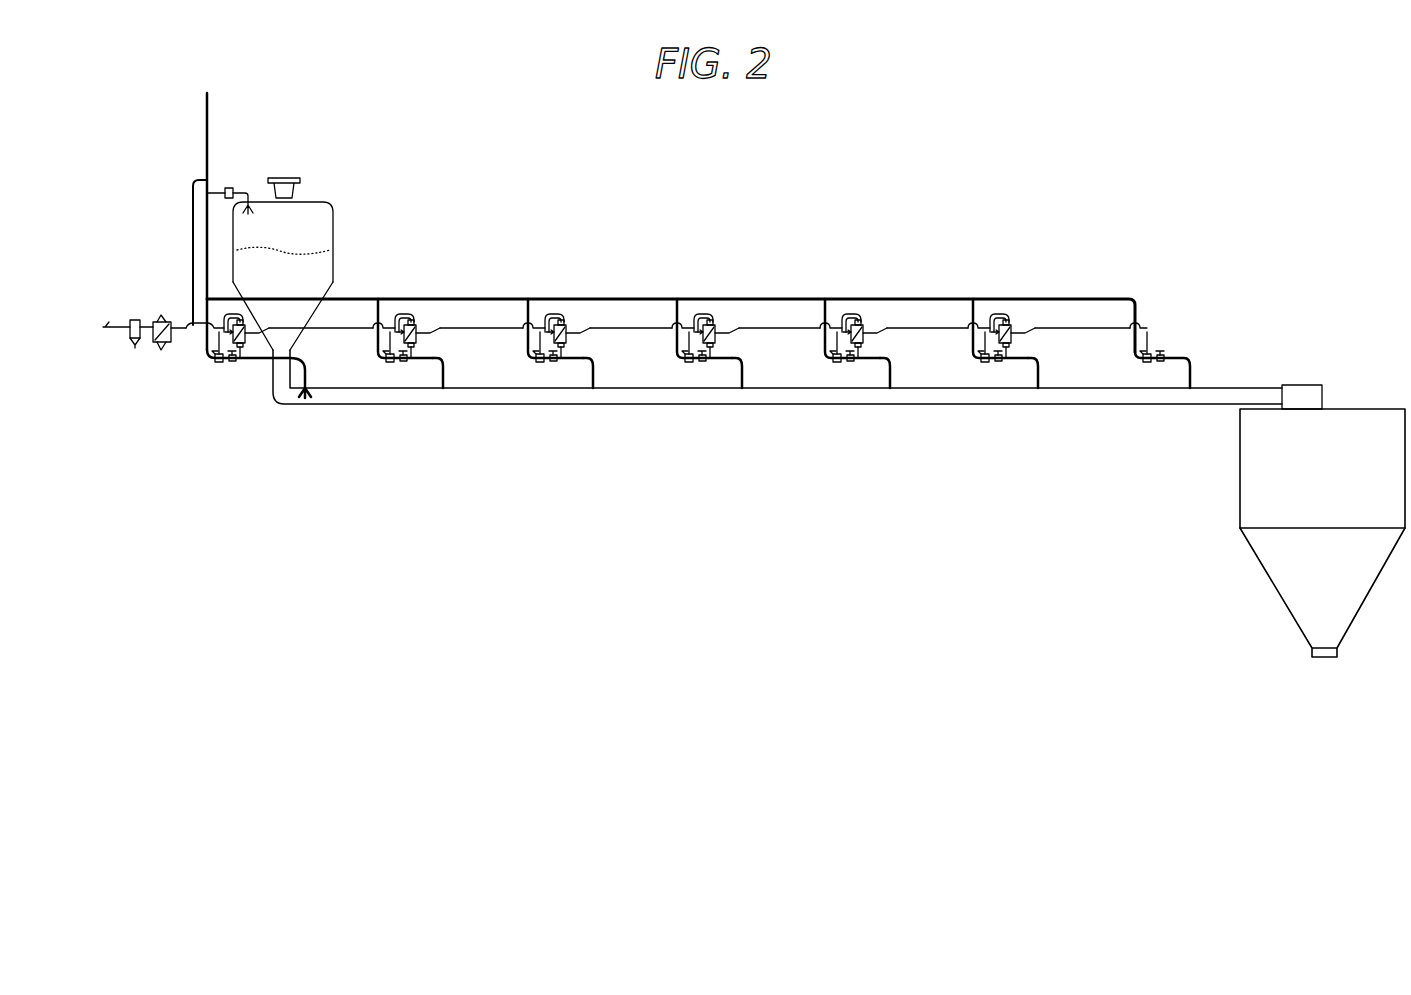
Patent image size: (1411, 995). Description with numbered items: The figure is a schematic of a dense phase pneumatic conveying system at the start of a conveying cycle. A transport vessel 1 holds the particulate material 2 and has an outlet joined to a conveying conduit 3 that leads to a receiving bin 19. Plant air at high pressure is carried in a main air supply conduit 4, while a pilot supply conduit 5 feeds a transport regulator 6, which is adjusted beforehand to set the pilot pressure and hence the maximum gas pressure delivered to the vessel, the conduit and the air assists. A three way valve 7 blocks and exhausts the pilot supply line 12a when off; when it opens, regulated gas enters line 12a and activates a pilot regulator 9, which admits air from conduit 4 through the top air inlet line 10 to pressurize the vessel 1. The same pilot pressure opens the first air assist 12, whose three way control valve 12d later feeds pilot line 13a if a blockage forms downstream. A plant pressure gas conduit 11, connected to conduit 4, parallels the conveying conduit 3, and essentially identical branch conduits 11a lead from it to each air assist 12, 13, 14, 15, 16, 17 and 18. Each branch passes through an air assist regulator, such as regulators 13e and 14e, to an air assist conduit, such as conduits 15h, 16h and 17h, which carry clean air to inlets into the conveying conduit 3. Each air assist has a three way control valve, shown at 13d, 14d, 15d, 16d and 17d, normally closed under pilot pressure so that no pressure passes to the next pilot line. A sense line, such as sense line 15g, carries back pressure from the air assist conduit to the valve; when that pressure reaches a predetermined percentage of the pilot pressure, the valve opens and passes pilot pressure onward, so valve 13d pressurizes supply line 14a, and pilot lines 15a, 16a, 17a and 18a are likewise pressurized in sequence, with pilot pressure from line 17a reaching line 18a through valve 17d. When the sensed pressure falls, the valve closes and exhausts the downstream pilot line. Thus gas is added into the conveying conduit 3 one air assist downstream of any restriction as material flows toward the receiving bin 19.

The transport vessel 1 is at (306, 244).
The material 2 is at (307, 252).
The conveying conduit 3 is at (638, 392).
The main air supply conduit 4 is at (207, 112).
The pilot supply conduit 5 is at (105, 329).
The transport regulator 6 is at (130, 325).
The three way valve 7 is at (160, 316).
The pilot regulator 9 is at (232, 188).
The inlet line 10 is at (250, 193).
The plant pressure gas conduit 11 is at (512, 299).
The branch conduit 11a is at (202, 333).
The first air assist 12 is at (259, 421).
The pilot supply line 12a is at (193, 213).
The three way control valve 12d is at (243, 360).
The air assist 13 is at (421, 413).
The pilot line 13a is at (325, 330).
The three way control valve 13d is at (413, 345).
The air assist regulator 13e is at (389, 364).
The air assist 14 is at (566, 413).
The supply line 14a is at (470, 330).
The three way control valve 14d is at (563, 345).
The air assist regulator 14e is at (538, 364).
The air assist 15 is at (713, 413).
The pilot supply line 15a is at (625, 330).
The three way control valve 15d is at (713, 345).
The sense line 15g is at (693, 348).
The air assist conduit 15h is at (744, 374).
The air assist 16 is at (896, 413).
The pilot supply line 16a is at (765, 330).
The three way control valve 16d is at (860, 345).
The air assist conduit 16h is at (892, 374).
The air assist 17 is at (1047, 413).
The pilot line 17a is at (920, 330).
The three way control valve 17d is at (1010, 345).
The air assist conduit 17h is at (1040, 374).
The air assist 18 is at (1147, 366).
The pilot supply line 18a is at (1068, 330).
The receiving bin 19 is at (1337, 410).